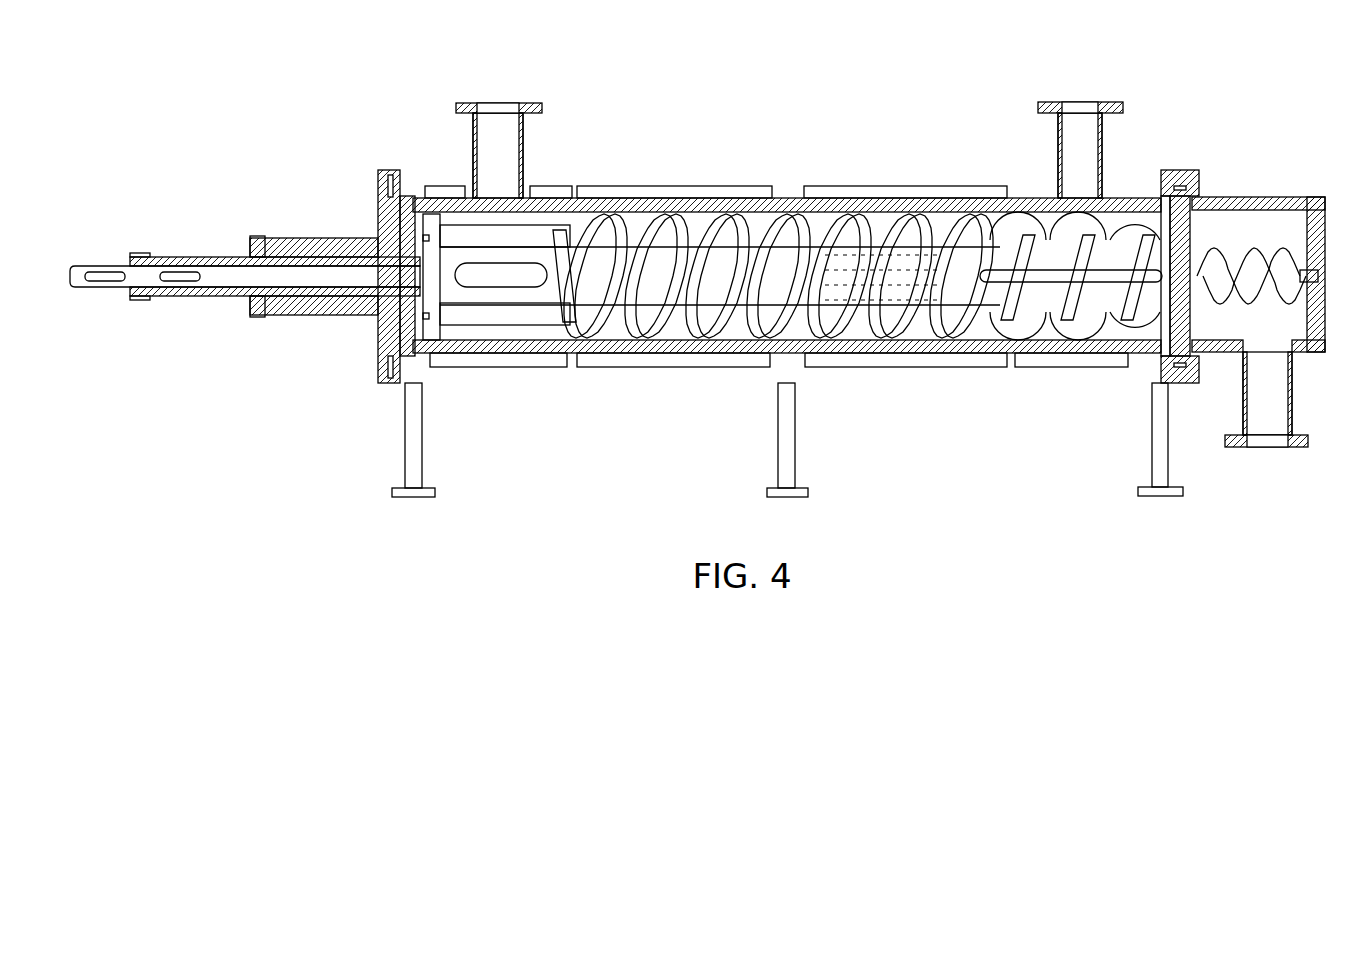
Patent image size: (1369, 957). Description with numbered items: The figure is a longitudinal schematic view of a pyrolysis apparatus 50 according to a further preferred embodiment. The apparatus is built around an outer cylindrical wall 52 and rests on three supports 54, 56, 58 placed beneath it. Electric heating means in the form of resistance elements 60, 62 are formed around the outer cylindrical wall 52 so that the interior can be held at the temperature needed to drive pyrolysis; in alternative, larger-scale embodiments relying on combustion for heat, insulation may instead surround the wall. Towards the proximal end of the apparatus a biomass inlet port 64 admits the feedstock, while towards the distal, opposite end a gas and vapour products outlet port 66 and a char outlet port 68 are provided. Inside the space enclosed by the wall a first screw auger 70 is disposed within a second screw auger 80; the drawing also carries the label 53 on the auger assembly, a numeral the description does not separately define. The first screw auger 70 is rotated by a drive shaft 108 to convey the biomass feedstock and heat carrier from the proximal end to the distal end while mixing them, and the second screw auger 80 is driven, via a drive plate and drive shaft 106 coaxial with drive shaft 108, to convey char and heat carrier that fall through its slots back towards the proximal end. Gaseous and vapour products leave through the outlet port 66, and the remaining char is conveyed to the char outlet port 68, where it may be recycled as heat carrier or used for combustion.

The pyrolysis apparatus 50 is at (802, 118).
The outer cylindrical wall 52 is at (1120, 198).
The screw 53 is at (655, 345).
The support 54 is at (1150, 463).
The support 56 is at (795, 458).
The support 58 is at (425, 458).
The resistance element 60 is at (950, 186).
The resistance element 62 is at (681, 186).
The biomass inlet port 64 is at (473, 158).
The gas and vapour products outlet port 66 is at (1058, 150).
The char outlet port 68 is at (1292, 400).
The first screw auger 70 is at (1232, 245).
The second screw auger 80 is at (940, 325).
The drive shaft 106 is at (183, 256).
The drive shaft 108 is at (83, 288).